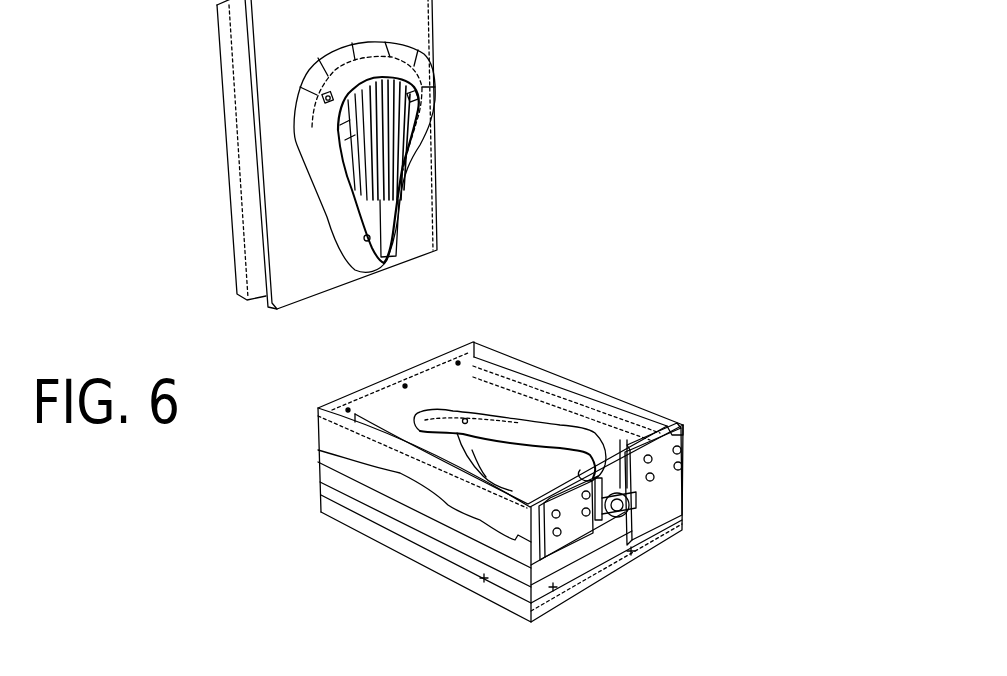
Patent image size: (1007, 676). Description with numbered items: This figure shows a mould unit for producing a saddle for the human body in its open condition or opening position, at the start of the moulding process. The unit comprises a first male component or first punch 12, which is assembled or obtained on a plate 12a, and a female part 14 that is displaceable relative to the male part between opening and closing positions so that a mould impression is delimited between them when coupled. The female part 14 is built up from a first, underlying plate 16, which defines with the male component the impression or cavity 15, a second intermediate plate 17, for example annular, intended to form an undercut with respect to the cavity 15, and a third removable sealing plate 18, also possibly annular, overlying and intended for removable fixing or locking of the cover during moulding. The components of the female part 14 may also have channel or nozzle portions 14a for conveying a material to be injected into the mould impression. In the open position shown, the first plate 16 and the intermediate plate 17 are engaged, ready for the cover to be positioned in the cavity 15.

The first male component or first punch 12 is at (407, 124).
The plate 12a is at (256, 103).
The female part 14 is at (640, 408).
The channel or nozzle portions 14a is at (636, 490).
The impression or cavity 15 is at (562, 456).
The first plate 16 is at (465, 540).
The second intermediate plate 17 is at (425, 496).
The third removable sealing plate 18 is at (348, 437).